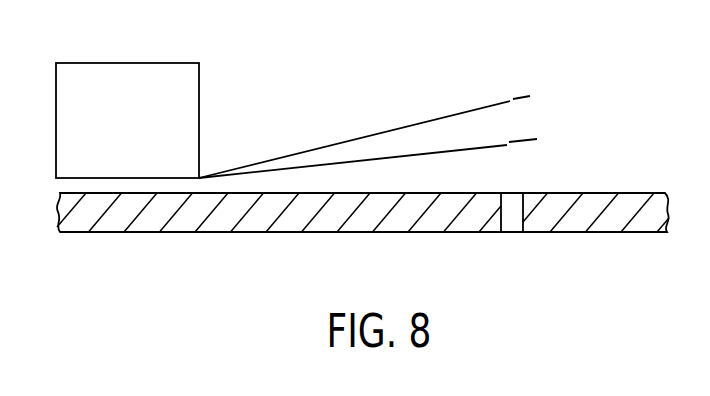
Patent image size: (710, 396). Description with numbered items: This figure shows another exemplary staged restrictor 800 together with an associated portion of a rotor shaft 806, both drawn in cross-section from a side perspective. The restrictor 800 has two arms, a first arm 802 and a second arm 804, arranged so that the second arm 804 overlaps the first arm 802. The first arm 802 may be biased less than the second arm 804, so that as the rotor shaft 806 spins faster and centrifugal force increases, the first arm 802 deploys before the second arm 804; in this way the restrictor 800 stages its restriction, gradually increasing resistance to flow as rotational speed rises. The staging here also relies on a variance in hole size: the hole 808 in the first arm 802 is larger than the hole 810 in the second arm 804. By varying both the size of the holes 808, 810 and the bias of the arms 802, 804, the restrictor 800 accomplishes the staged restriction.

The restrictor 800 is at (235, 103).
The first arm 802 is at (497, 143).
The second arm 804 is at (497, 101).
The rotor shaft 806 is at (620, 232).
The hole 808 is at (508, 140).
The hole 810 is at (513, 98).